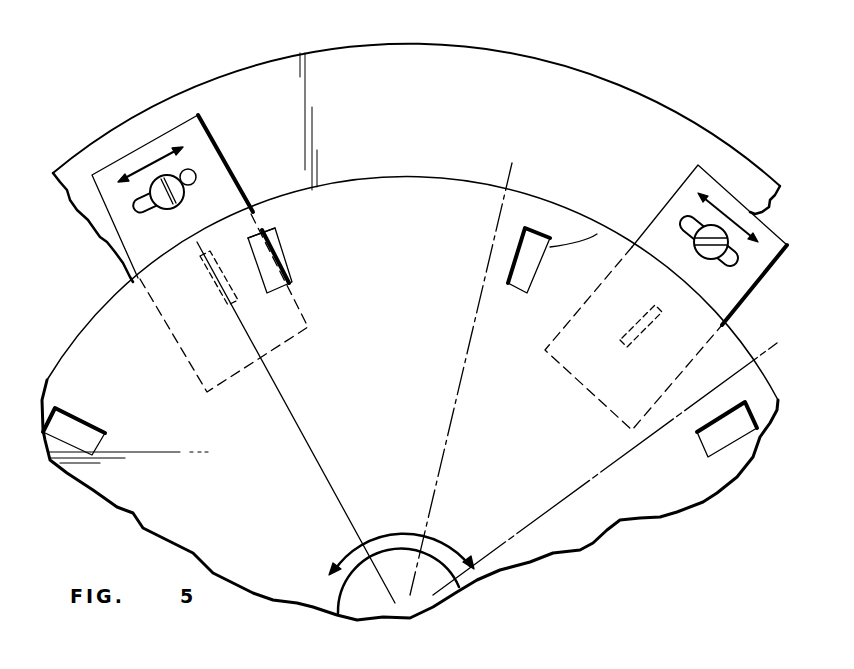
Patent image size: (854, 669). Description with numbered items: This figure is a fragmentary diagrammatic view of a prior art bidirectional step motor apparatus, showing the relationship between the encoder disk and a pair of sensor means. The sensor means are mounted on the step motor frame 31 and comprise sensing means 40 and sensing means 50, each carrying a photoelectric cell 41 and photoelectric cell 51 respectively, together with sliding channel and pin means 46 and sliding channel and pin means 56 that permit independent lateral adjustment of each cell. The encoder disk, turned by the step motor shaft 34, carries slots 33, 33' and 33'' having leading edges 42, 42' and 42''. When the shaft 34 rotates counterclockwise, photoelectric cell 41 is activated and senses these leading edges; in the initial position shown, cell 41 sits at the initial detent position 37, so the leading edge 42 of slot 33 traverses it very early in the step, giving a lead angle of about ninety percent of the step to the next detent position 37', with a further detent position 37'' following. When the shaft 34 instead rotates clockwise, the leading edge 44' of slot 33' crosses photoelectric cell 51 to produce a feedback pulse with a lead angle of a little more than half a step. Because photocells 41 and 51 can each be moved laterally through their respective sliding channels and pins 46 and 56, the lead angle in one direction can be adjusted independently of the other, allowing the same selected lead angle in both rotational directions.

The step motor frame 31 is at (487, 63).
The slot 33 is at (287, 252).
The slot 33' is at (546, 261).
The slot 33'' is at (716, 453).
The shaft 34 is at (422, 603).
The initial detent position 37 is at (296, 422).
The next detent position 37' is at (461, 379).
The detent position 37'' is at (605, 469).
The sensing means 40 is at (182, 192).
The photoelectric cell 41 is at (227, 310).
The leading edge 42 is at (263, 202).
The leading edge 42' is at (545, 209).
The leading edge 42'' is at (696, 438).
The leading edge 44' is at (587, 225).
The sliding channel and pin means 46 is at (190, 173).
The sensing means 50 is at (709, 247).
The photoelectric cell 51 is at (643, 333).
The sliding channel and pin means 56 is at (700, 245).